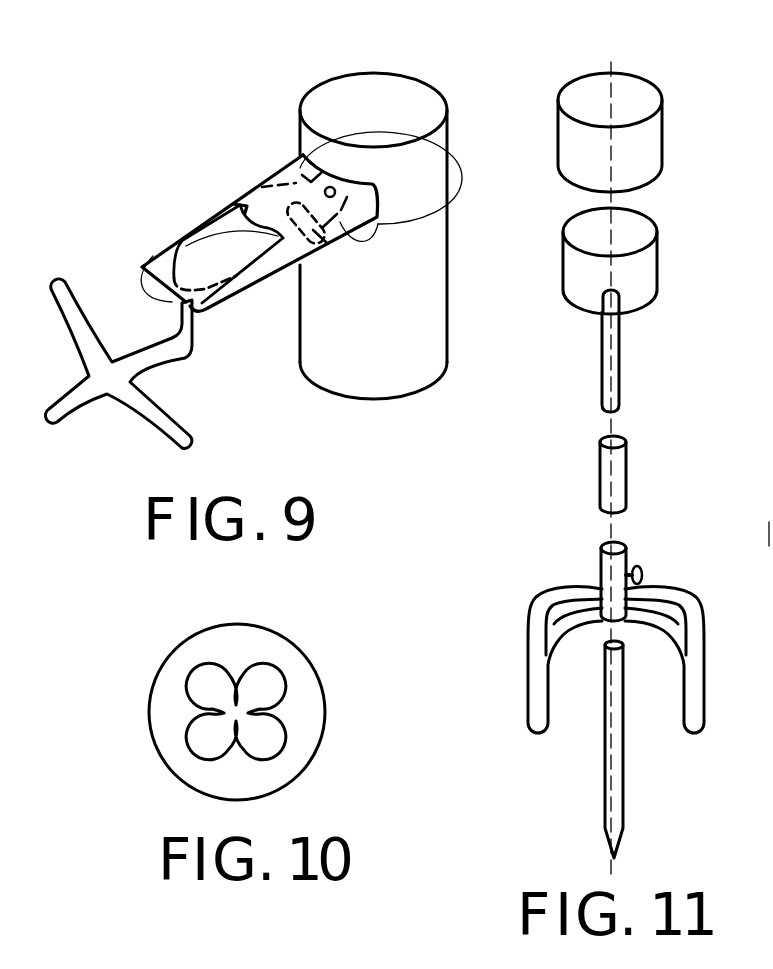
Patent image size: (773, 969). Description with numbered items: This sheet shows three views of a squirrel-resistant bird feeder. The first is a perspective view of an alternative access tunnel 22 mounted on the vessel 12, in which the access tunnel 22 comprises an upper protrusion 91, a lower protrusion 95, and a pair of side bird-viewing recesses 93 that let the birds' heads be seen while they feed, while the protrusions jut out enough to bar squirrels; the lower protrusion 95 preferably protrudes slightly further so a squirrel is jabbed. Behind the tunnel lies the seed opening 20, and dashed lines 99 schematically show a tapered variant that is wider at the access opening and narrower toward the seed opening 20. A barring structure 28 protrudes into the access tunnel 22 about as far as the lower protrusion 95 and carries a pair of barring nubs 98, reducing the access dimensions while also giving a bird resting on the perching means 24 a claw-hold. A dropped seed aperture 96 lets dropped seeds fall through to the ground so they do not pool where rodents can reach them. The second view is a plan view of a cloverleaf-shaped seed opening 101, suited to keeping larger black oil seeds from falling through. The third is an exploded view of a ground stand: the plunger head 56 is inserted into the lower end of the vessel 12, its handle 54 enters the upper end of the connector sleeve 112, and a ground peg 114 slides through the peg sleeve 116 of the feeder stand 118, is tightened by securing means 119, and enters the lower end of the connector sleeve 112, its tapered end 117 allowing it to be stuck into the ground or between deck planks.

In FIG. 9, the vessel 12 is at (360, 311).
In FIG. 11, the vessel 12 is at (630, 137).
In FIG. 9, the seed opening 20 is at (324, 191).
In FIG. 9, the access tunnel 22 is at (247, 199).
In FIG. 9, the perching means 24 is at (78, 296).
In FIG. 9, the barring structure 28 is at (165, 300).
In FIG. 9, the upper protrusion 91 is at (262, 187).
In FIG. 9, the bird-viewing recesses 93 is at (215, 231).
In FIG. 9, the lower protrusion 95 is at (217, 320).
In FIG. 9, the dropped seed aperture 96 is at (340, 222).
In FIG. 9, the barring nubs 98 is at (283, 262).
In FIG. 9, the dashed lines 99 is at (415, 207).
In FIG. 10, the seed opening 101 is at (248, 699).
In FIG. 11, the plunger head 56 is at (627, 268).
In FIG. 11, the handle 54 is at (615, 362).
In FIG. 11, the connector sleeve 112 is at (618, 475).
In FIG. 11, the peg sleeve 116 is at (603, 570).
In FIG. 11, the securing means 119 is at (645, 575).
In FIG. 11, the feeder stand 118 is at (560, 592).
In FIG. 11, the ground peg 114 is at (625, 750).
In FIG. 11, the tapered end 117 is at (625, 846).